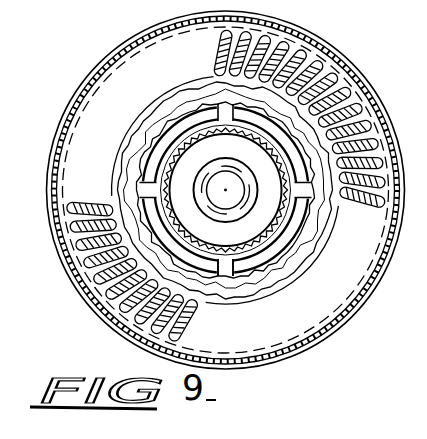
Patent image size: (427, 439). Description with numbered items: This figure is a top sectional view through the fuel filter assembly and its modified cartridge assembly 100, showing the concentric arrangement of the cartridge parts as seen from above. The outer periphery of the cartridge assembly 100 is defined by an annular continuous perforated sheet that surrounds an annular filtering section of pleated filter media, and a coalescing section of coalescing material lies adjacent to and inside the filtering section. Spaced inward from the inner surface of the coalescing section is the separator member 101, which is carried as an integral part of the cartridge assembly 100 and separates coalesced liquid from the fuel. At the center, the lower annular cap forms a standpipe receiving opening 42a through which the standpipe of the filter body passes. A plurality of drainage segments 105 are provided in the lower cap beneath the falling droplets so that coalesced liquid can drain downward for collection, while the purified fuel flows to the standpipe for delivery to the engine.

The cartridge assembly 100 is at (226, 184).
The standpipe receiving opening 42a is at (181, 190).
The separator member 101 is at (226, 248).
The drainage segments 105 is at (234, 213).